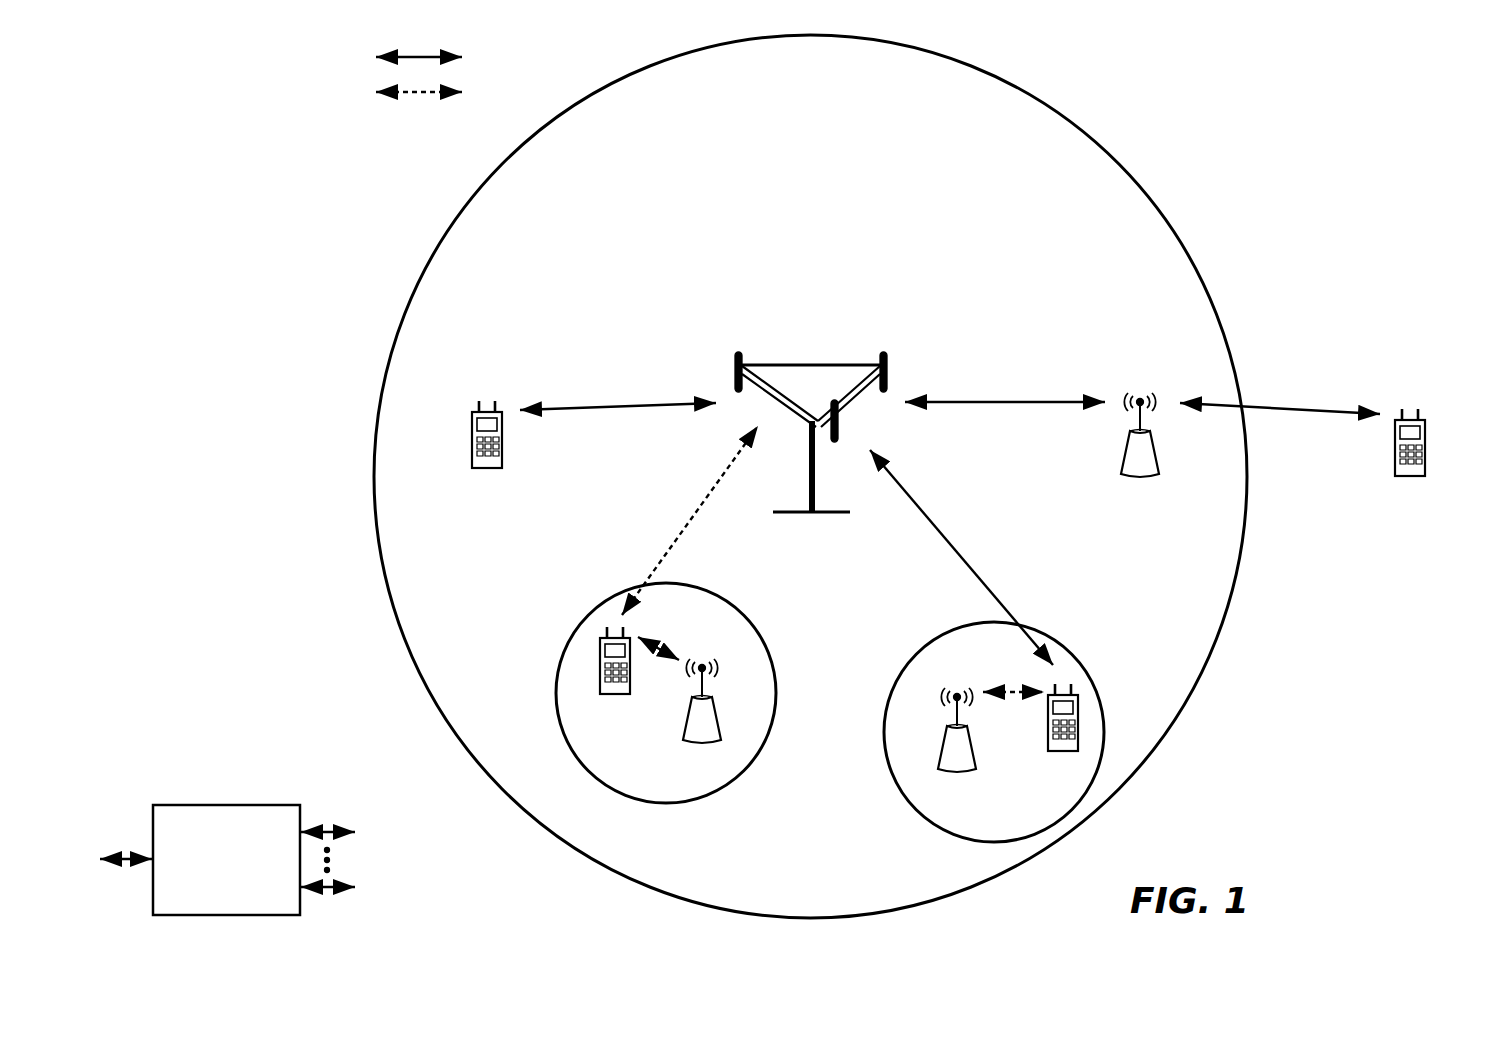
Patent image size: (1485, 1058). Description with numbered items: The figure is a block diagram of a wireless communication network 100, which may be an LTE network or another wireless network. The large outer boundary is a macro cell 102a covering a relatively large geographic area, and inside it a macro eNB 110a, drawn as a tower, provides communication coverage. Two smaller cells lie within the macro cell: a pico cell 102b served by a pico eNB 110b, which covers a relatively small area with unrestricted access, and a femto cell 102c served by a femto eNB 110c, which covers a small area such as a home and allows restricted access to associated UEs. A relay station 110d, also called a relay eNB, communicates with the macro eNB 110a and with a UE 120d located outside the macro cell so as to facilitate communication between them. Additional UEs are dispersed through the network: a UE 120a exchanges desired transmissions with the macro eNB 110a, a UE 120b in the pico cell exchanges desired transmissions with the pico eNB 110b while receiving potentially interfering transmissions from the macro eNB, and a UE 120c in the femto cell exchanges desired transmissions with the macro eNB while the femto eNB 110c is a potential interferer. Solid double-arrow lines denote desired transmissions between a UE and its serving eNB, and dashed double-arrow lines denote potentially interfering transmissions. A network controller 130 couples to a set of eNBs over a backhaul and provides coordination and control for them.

The wireless communication network 100 is at (1330, 106).
The macro cell 102a is at (1116, 129).
The pico cell 102b is at (763, 603).
The femto cell 102c is at (911, 656).
The macro eNB 110a is at (821, 351).
The pico eNB 110b is at (720, 724).
The femto eNB 110c is at (940, 747).
The relay station 110d is at (1140, 399).
The UE 120a is at (472, 424).
The UE 120b is at (600, 690).
The UE 120c is at (1048, 744).
The UE 120d is at (1426, 430).
The network controller 130 is at (221, 805).